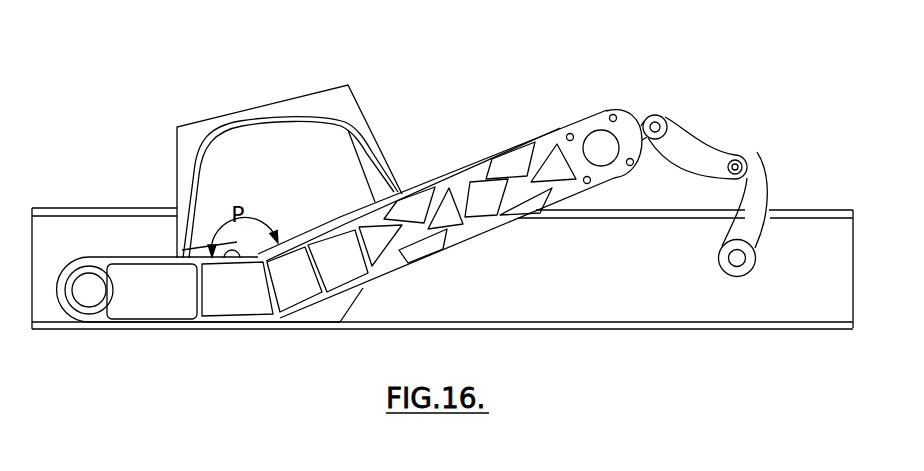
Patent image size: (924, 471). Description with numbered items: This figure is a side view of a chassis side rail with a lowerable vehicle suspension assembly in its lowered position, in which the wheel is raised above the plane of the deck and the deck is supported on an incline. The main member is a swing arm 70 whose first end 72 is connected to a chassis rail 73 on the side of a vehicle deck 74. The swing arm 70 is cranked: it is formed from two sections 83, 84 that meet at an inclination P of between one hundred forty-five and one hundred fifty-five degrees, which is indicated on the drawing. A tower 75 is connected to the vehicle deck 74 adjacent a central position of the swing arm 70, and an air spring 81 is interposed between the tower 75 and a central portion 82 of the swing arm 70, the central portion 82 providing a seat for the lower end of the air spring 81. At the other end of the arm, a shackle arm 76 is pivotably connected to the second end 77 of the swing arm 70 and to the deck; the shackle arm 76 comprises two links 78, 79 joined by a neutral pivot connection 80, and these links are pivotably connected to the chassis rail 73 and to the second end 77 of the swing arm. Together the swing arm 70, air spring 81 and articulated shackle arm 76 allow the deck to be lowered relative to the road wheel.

The swing arm 70 is at (349, 245).
The first end 72 is at (118, 323).
The chassis rail 73 is at (622, 282).
The vehicle deck 74 is at (822, 209).
The tower 75 is at (357, 98).
The shackle arm 76 is at (770, 181).
The second end 77 is at (450, 226).
The link 78 is at (694, 140).
The link 79 is at (762, 242).
The neutral pivot connection 80 is at (741, 156).
The air spring 81 is at (318, 138).
The central portion 82 is at (260, 256).
The section 83 is at (157, 303).
The section 84 is at (478, 226).